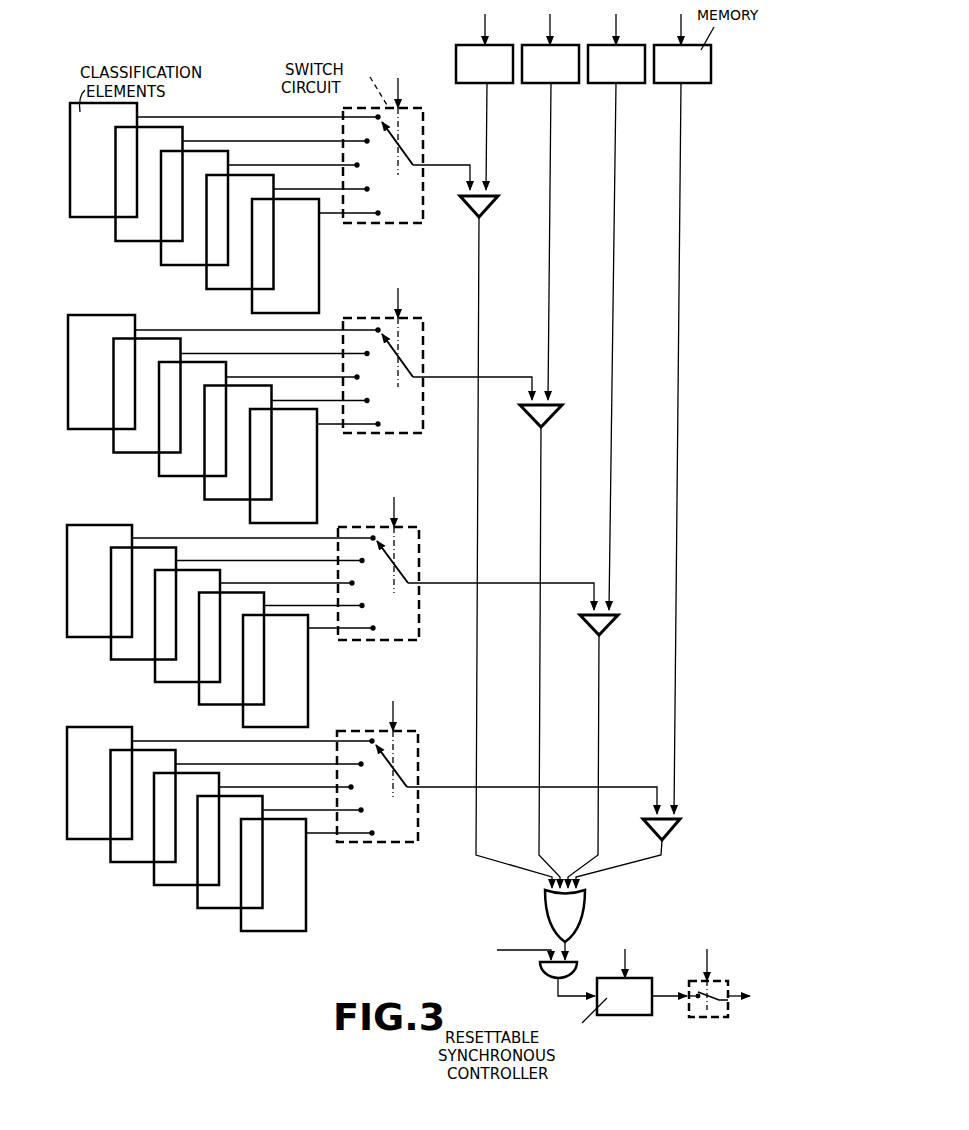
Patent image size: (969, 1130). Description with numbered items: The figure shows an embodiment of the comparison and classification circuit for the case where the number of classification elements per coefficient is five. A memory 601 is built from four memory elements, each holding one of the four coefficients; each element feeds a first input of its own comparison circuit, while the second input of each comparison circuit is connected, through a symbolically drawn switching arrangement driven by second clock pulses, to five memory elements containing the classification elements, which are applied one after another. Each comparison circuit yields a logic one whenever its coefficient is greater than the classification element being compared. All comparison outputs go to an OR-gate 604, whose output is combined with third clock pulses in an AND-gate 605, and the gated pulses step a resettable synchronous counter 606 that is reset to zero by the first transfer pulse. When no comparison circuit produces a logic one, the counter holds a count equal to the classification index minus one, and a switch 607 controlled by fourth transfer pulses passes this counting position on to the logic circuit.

The memory 601 is at (609, 414).
The OR-gate circuit 604 is at (545, 915).
The AND-gate 605 is at (545, 970).
The resettable synchronous counter 606 is at (626, 1016).
The switch 607 is at (692, 1018).